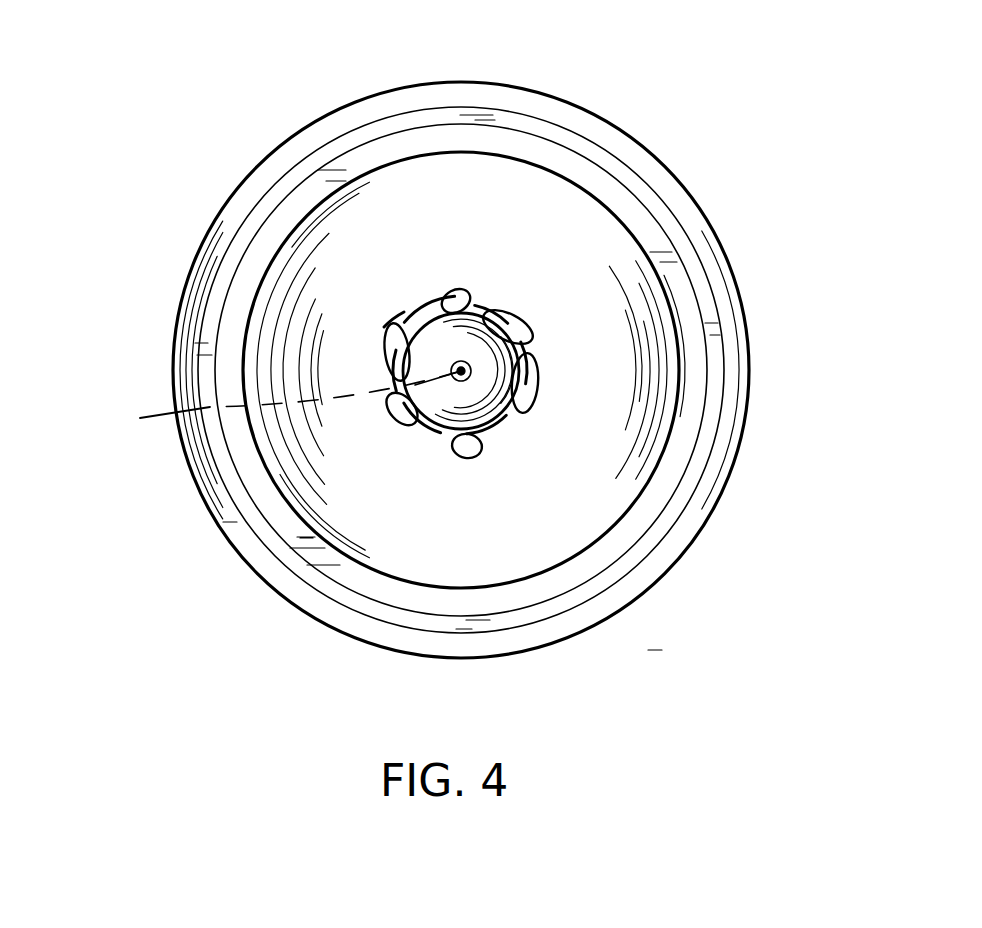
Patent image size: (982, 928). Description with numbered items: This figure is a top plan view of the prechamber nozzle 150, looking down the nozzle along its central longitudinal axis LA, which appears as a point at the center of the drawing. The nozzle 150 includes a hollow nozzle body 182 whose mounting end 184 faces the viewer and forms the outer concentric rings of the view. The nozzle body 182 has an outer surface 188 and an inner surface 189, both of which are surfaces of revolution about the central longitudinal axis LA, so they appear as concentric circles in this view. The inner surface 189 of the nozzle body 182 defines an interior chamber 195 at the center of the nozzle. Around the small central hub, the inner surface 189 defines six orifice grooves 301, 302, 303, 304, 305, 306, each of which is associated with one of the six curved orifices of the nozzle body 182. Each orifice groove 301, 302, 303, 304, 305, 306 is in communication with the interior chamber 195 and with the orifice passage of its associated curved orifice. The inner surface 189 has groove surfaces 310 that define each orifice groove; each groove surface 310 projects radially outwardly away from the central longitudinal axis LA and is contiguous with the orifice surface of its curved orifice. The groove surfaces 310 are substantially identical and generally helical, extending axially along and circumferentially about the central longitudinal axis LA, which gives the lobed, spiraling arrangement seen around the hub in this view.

The nozzle 150 is at (197, 117).
The nozzle body 182 is at (390, 190).
The mounting end 184 is at (607, 185).
The outer surface 188 is at (253, 572).
The inner surface 189 is at (505, 481).
The interior chamber 195 is at (519, 438).
The orifice groove 301 is at (531, 377).
The orifice groove 302 is at (523, 313).
The orifice groove 303 is at (447, 293).
The orifice groove 304 is at (385, 337).
The orifice groove 305 is at (389, 419).
The orifice groove 306 is at (456, 451).
The groove surface 310 is at (470, 297).
The central longitudinal axis LA is at (284, 397).